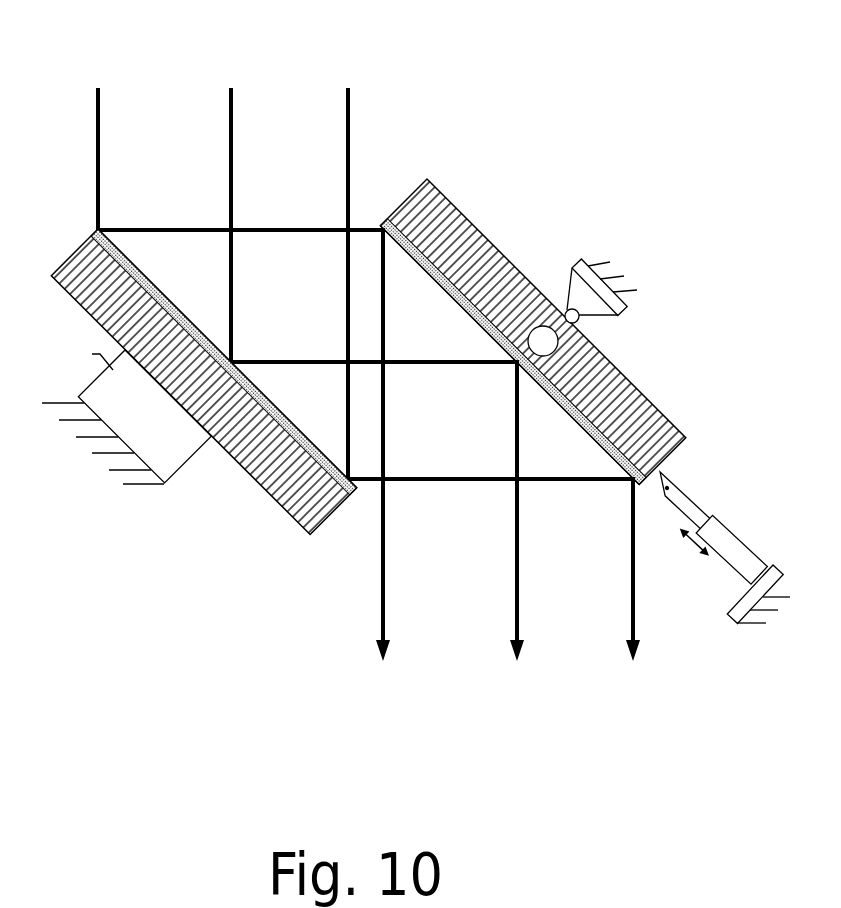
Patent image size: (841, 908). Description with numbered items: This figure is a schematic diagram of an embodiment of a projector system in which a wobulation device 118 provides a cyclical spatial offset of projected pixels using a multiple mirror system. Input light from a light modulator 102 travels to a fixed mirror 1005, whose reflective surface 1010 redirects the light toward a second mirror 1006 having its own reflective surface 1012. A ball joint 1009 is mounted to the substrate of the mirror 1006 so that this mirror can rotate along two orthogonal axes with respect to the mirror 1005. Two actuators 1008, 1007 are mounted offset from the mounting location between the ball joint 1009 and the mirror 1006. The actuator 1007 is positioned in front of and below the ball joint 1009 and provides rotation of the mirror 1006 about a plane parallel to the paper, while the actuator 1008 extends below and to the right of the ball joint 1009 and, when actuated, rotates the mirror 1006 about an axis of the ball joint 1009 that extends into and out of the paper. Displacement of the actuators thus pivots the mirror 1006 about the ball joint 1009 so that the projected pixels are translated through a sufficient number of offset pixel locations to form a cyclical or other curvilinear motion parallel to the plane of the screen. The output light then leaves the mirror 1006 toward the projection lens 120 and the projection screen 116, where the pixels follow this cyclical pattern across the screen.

The wobulation device 118 is at (83, 33).
The light modulator 102 is at (365, 258).
The mirror 1005 is at (279, 509).
The reflective surface 1010 is at (143, 278).
The mirror 1006 is at (424, 182).
The reflective surface 1012 is at (465, 312).
The actuator 1007 is at (559, 340).
The actuator 1008 is at (694, 505).
The ball joint 1009 is at (583, 258).
The projection lens 120 is at (507, 514).
The projection screen 116 is at (505, 756).